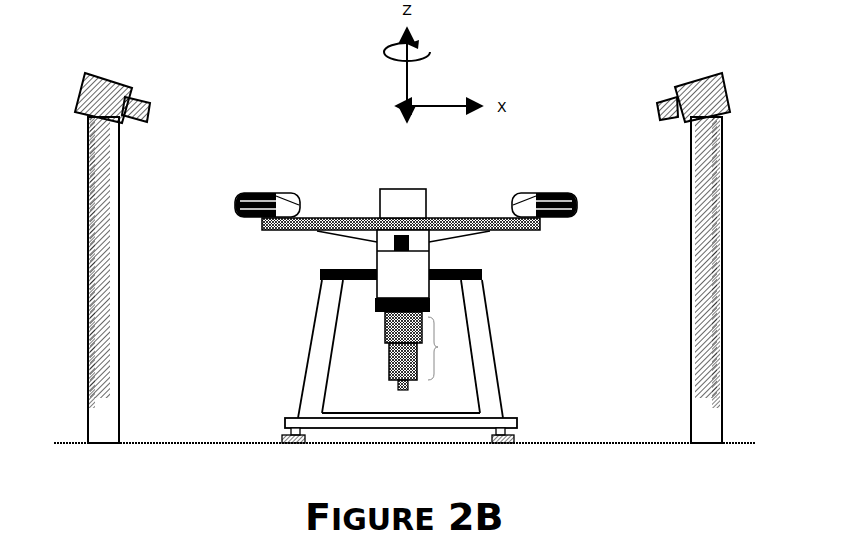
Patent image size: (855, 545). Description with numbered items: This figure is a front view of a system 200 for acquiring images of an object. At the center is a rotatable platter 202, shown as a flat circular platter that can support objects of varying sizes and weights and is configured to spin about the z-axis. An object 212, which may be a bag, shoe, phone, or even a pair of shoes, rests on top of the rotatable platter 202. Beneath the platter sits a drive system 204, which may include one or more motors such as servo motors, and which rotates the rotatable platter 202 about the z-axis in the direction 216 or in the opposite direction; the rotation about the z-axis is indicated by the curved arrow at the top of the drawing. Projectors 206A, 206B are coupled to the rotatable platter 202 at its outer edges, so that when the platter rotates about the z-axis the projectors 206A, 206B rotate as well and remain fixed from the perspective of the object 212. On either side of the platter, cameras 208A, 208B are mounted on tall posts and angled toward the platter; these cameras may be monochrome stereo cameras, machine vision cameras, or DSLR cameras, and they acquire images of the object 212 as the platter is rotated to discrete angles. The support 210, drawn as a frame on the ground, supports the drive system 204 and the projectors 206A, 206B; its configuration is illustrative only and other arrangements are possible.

The system 200 is at (276, 122).
The rotatable platter 202 is at (348, 218).
The drive system 204 is at (438, 347).
The projector 206A is at (576, 212).
The projector 206B is at (237, 212).
The camera 208A is at (730, 93).
The camera 208B is at (82, 90).
The support 210 is at (310, 362).
The object 212 is at (426, 203).
The direction 216 is at (432, 52).